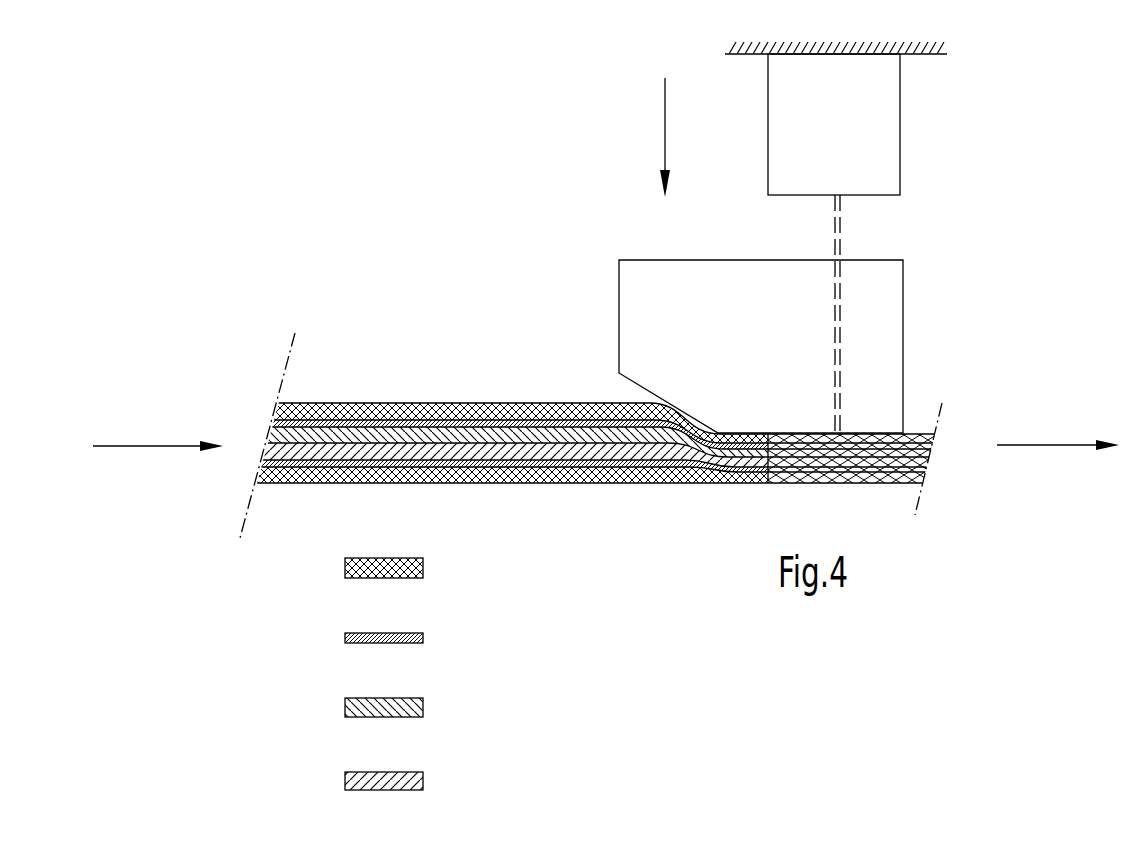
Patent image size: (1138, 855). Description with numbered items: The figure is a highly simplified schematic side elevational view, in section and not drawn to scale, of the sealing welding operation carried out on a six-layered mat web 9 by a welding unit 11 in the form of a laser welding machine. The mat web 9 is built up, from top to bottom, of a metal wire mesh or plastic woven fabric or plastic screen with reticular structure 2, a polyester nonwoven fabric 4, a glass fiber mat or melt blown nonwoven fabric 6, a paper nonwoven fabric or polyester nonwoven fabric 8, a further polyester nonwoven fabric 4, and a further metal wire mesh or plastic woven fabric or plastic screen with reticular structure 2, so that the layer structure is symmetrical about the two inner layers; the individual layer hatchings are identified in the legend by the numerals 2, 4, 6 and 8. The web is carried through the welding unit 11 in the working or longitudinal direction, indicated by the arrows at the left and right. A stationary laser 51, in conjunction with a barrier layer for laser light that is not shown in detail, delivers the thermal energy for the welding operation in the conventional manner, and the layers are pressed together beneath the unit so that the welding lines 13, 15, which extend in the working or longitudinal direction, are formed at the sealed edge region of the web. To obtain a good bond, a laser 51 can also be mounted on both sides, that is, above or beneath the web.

The metal wire mesh or plastic woven fabric or plastic screen with reticular structu 2 is at (423, 567).
The polyester nonwoven fabric 4 is at (423, 640).
The glass fiber mat or melt blown nonwoven fabric 6 is at (423, 705).
The paper nonwoven fabric or polyester nonwoven fabric 8 is at (423, 780).
The mat web 9 is at (651, 392).
The welding unit 11 is at (840, 224).
The welding line 13 is at (906, 404).
The welding line 15 is at (917, 435).
The laser 51 is at (768, 75).